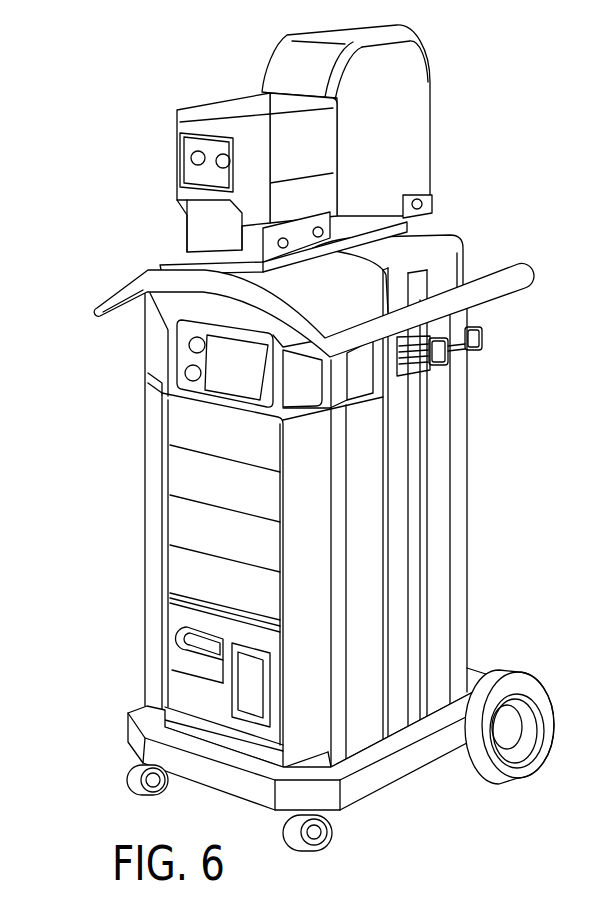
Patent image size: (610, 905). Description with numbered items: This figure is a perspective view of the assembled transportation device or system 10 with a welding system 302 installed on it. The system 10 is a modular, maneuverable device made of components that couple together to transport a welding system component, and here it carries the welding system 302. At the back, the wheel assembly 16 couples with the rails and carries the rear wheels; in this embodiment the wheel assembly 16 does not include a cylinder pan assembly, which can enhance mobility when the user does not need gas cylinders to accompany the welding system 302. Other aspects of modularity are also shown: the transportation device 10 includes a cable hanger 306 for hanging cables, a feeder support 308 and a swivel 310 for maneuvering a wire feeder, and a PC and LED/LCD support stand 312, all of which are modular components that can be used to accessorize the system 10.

The transportation device or system 10 is at (111, 696).
The wheel assembly 16 is at (449, 763).
The welding system 302 is at (95, 257).
The cable hanger 306 is at (486, 338).
The feeder support 308 is at (468, 261).
The swivel 310 is at (378, 237).
The PC & LED/LCD support stand 312 is at (98, 316).